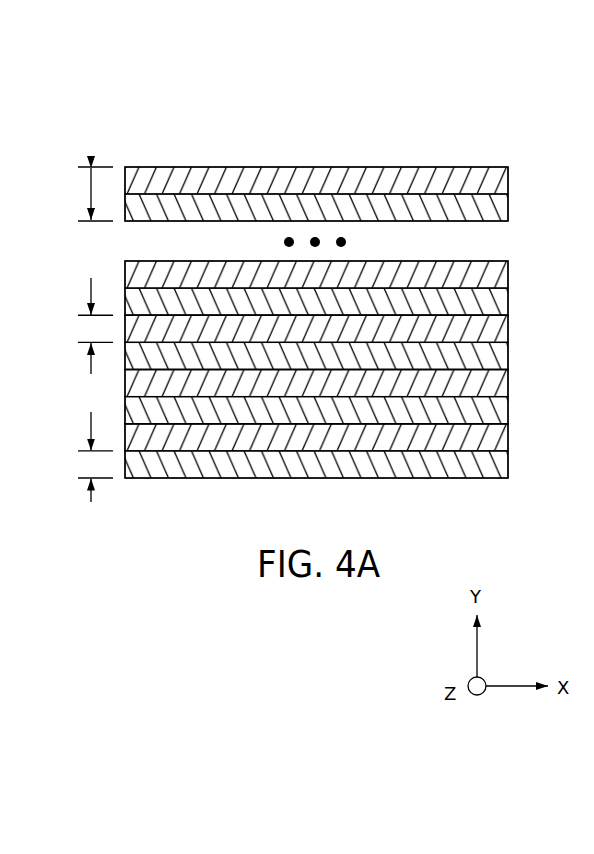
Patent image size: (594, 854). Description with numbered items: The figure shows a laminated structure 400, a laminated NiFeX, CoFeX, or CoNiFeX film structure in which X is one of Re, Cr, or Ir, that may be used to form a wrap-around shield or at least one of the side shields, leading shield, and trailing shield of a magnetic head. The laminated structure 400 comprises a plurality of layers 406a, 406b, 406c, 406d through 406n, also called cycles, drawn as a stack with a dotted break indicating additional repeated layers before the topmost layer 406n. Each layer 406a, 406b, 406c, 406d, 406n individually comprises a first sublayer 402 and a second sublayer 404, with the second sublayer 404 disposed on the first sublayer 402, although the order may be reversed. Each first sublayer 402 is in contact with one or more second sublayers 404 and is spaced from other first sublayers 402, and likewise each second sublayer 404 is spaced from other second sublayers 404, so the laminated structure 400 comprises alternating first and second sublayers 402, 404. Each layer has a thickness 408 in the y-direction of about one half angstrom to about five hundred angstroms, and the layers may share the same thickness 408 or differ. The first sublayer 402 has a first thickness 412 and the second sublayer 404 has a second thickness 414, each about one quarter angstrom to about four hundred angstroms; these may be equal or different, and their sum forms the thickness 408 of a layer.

The laminated structure 400 is at (117, 105).
The first sublayer 402 is at (336, 218).
The second sublayer 404 is at (336, 191).
The layer 406a is at (518, 424).
The layer 406b is at (518, 370).
The layer 406c is at (518, 315).
The layer 406d is at (518, 261).
The layer 406n is at (518, 167).
The thickness 408 is at (78, 194).
The first thickness 412 is at (93, 457).
The second thickness 414 is at (93, 326).